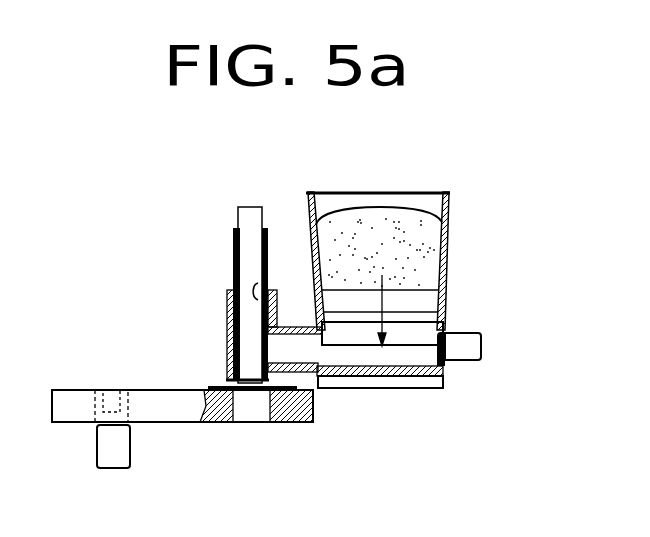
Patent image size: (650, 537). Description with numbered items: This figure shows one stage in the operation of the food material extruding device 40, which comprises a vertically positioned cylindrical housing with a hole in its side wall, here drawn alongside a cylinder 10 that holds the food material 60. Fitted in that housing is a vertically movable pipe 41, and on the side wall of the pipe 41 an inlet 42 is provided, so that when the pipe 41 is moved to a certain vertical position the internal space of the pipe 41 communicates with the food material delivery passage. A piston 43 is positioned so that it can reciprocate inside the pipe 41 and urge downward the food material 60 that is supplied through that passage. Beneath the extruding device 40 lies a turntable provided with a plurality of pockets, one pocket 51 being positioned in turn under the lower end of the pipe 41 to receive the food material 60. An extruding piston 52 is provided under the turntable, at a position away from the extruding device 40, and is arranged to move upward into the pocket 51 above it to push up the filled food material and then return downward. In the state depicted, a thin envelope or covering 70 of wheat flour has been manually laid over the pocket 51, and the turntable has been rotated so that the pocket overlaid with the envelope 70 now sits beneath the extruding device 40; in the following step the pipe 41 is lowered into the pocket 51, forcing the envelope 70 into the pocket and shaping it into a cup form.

The crucible 10 is at (448, 243).
The food material 60 is at (397, 220).
The food material extruding device 40 is at (215, 320).
The pipe 41 is at (233, 253).
The inlet 42 is at (256, 290).
The piston 43 is at (250, 218).
The pocket 51 is at (252, 410).
The extruding piston 52 is at (118, 443).
The envelope or covering 70 is at (222, 386).